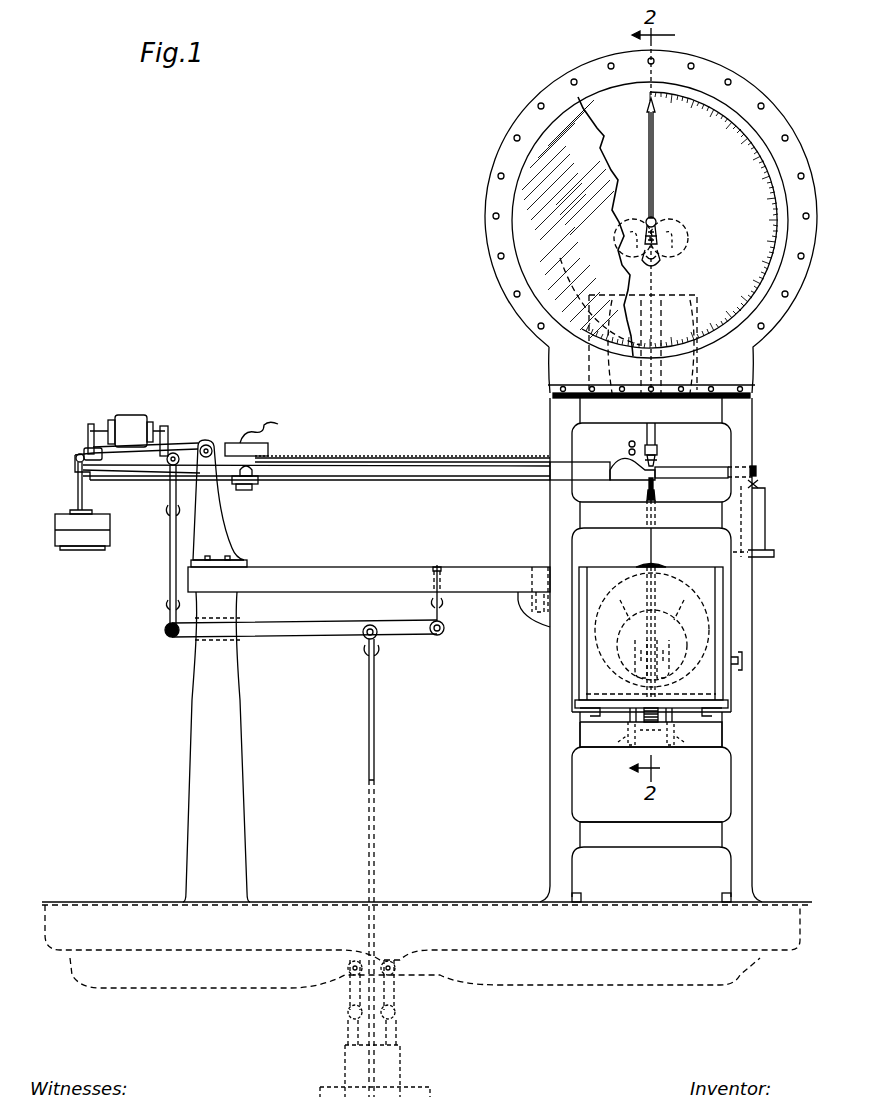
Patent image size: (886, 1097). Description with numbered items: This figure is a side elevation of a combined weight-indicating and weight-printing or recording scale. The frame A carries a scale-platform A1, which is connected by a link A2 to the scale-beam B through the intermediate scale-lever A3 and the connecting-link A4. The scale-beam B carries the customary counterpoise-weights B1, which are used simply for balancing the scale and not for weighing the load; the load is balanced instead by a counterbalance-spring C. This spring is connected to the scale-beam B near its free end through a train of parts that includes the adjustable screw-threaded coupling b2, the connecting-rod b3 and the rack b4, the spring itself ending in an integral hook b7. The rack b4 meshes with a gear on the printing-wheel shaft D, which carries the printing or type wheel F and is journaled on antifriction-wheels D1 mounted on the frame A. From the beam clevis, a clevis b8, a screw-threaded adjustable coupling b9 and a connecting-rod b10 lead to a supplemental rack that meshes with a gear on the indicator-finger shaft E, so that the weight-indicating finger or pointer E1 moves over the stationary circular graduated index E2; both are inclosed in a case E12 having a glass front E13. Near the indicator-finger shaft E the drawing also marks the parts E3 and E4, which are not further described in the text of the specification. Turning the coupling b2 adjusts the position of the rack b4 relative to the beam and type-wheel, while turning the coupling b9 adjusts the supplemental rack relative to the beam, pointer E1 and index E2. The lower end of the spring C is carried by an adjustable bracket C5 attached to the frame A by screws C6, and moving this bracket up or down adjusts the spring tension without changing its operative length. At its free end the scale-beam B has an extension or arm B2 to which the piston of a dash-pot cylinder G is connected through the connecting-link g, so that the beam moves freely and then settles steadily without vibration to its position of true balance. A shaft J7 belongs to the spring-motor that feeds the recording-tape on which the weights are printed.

The frame A is at (598, 580).
The scale-platform A1 is at (420, 902).
The link A2 is at (172, 528).
The intermediate scale-lever A3 is at (312, 638).
The connecting-link A4 is at (376, 722).
The scale-beam B is at (490, 460).
The counterpoise-weights B1 is at (137, 420).
The extension or arm B2 is at (756, 468).
The adjustable screw-threaded coupling b2 is at (656, 500).
The connecting-rod b3 is at (648, 548).
The rack b4 is at (640, 622).
The hook b7 is at (656, 486).
The clevis b8 is at (658, 468).
The screw-threaded adjustable coupling b9 is at (656, 452).
The connecting-rod b10 is at (656, 438).
The counterbalance-spring C is at (656, 735).
The adjustable bracket C5 is at (631, 768).
The screws C6 is at (651, 717).
The printing-wheel shaft D is at (651, 637).
The antifriction-wheels D1 is at (656, 633).
The indicator-finger shaft E is at (656, 222).
The weight-indicating finger or pointer E1 is at (654, 160).
The circular graduated index E2 is at (738, 136).
The hub cover E3 is at (682, 222).
The dial face E4 is at (650, 220).
The case E12 is at (778, 112).
The glass front E13 is at (581, 226).
The printing or type wheel F is at (660, 568).
The dash-pot cylinder G is at (766, 514).
The connecting-link g is at (756, 488).
The shaft J7 is at (742, 658).